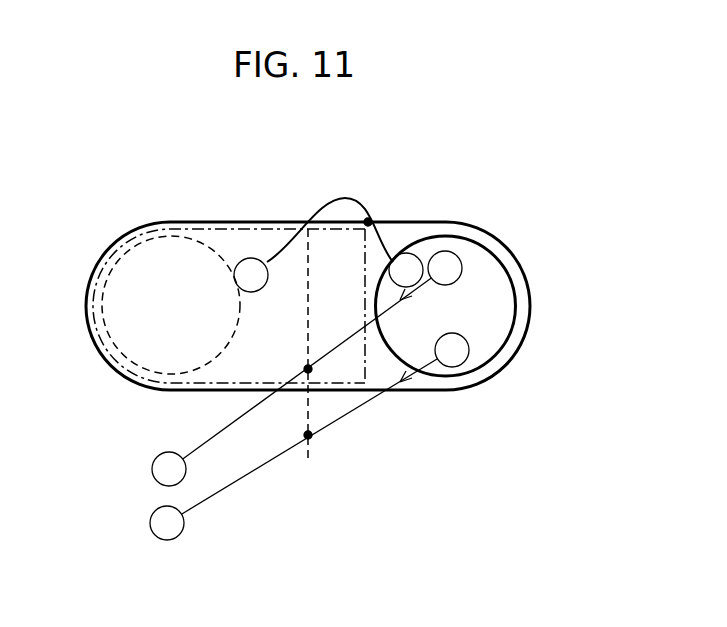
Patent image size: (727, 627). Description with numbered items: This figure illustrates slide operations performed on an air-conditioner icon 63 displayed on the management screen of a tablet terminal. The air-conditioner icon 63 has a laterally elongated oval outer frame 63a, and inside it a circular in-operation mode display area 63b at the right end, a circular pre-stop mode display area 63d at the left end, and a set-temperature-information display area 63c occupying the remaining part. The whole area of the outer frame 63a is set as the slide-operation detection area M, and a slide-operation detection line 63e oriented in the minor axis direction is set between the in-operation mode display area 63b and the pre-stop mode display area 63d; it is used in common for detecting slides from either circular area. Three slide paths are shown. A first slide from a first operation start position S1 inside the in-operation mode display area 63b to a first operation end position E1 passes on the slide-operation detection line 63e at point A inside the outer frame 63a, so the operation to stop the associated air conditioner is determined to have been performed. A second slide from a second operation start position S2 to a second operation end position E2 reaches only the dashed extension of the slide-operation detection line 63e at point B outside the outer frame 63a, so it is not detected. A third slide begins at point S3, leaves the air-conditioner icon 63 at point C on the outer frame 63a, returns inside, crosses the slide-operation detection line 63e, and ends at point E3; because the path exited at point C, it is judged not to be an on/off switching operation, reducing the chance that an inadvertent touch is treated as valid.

The air-conditioner icon 63 is at (388, 172).
The outer frame 63a is at (395, 220).
The in-operation mode display area 63b is at (513, 268).
The set-temperature-information display area 63c is at (228, 388).
The pre-stop mode display area 63d is at (120, 384).
The slide-operation detection line 63e is at (310, 278).
The slide-operation detection area M is at (242, 240).
The point C is at (368, 222).
The point A is at (308, 368).
The point B is at (308, 435).
The first operation start position S1 is at (322, 355).
The second operation start position S2 is at (326, 423).
The point S3 is at (406, 270).
The first operation end position E1 is at (169, 469).
The second operation end position E2 is at (167, 523).
The point E3 is at (251, 275).